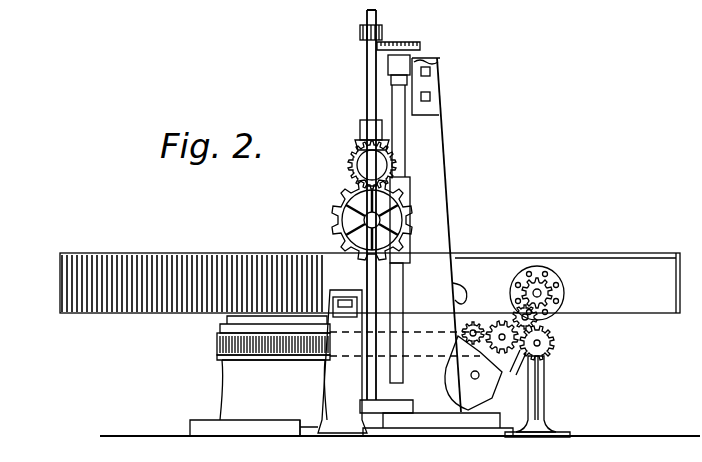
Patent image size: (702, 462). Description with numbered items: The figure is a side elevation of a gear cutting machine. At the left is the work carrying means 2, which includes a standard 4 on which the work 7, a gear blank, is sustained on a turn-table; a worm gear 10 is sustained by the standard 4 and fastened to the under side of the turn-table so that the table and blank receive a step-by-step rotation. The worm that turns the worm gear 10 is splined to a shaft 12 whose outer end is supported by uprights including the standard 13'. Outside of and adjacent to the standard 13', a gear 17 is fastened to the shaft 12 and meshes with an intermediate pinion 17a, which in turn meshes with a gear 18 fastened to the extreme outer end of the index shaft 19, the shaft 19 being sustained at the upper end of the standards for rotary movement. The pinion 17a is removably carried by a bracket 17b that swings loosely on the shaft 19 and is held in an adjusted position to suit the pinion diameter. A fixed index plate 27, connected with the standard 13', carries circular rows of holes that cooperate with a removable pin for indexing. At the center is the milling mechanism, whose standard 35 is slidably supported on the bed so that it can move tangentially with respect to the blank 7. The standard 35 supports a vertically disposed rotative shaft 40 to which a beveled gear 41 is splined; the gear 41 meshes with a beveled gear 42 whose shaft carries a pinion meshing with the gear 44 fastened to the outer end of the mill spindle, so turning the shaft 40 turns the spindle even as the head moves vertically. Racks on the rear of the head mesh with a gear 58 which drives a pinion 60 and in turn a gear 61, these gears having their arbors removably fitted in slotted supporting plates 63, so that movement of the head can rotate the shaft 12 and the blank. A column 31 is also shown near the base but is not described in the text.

The work carrying means 2 is at (239, 406).
The standard 4 is at (275, 368).
The work 7 is at (86, 253).
The worm gear 10 is at (217, 341).
The shaft 12 is at (547, 362).
The standard 13' is at (555, 418).
The gear 17 is at (548, 350).
The pinion 17a is at (532, 320).
The bracket 17b is at (513, 364).
The gear 18 is at (541, 289).
The index shaft 19 is at (541, 291).
The index plate 27 is at (547, 278).
The column 31 is at (333, 363).
The standard 35 is at (444, 126).
The shaft 40 is at (367, 83).
The beveled gear 41 is at (360, 131).
The beveled gear 42 is at (352, 162).
The gear 44 is at (335, 200).
The gear 58 is at (453, 290).
The pinion 60 is at (465, 337).
The gear 61 is at (494, 322).
The supporting plate 63 is at (458, 368).